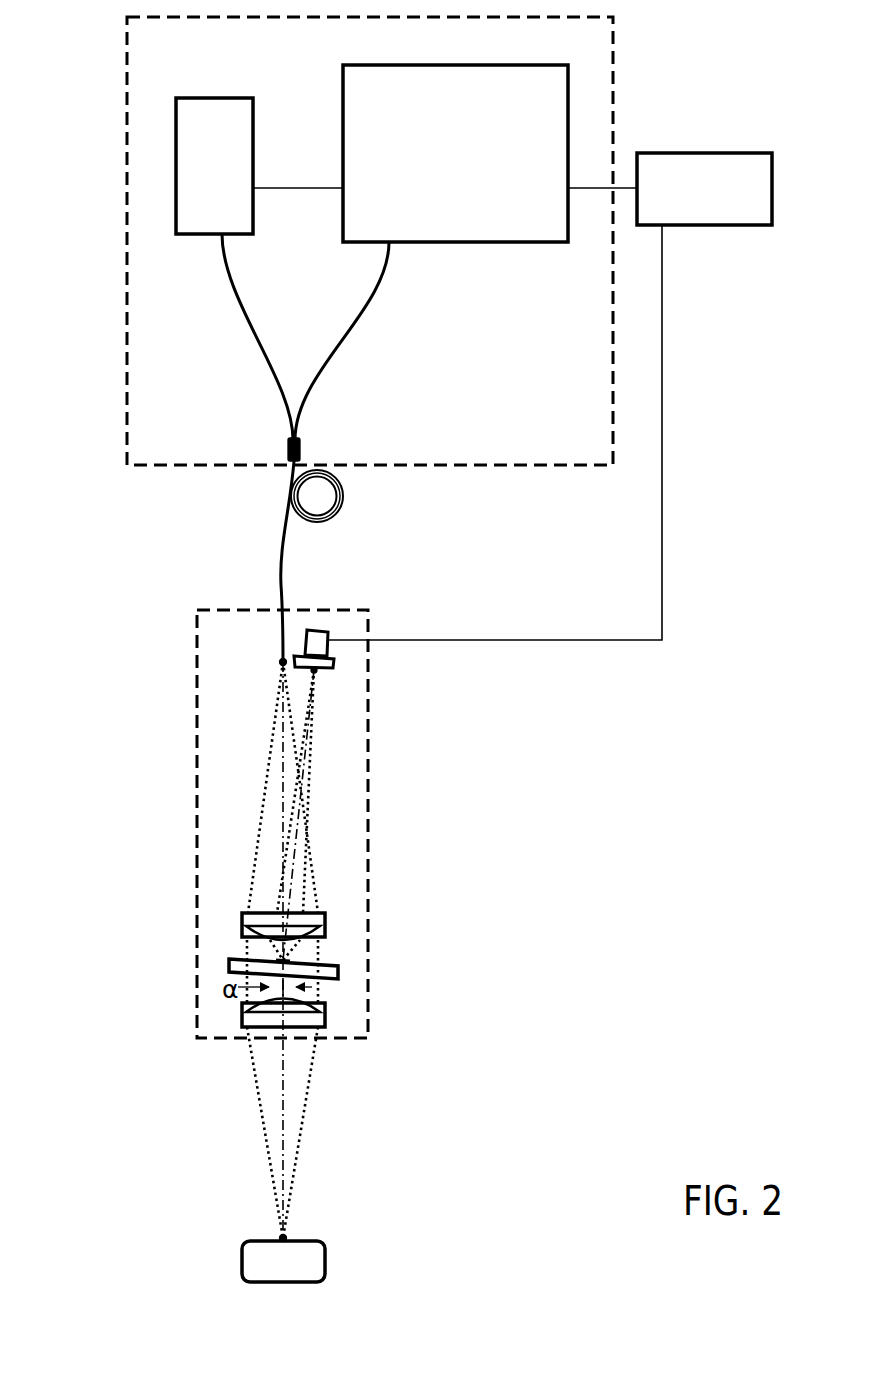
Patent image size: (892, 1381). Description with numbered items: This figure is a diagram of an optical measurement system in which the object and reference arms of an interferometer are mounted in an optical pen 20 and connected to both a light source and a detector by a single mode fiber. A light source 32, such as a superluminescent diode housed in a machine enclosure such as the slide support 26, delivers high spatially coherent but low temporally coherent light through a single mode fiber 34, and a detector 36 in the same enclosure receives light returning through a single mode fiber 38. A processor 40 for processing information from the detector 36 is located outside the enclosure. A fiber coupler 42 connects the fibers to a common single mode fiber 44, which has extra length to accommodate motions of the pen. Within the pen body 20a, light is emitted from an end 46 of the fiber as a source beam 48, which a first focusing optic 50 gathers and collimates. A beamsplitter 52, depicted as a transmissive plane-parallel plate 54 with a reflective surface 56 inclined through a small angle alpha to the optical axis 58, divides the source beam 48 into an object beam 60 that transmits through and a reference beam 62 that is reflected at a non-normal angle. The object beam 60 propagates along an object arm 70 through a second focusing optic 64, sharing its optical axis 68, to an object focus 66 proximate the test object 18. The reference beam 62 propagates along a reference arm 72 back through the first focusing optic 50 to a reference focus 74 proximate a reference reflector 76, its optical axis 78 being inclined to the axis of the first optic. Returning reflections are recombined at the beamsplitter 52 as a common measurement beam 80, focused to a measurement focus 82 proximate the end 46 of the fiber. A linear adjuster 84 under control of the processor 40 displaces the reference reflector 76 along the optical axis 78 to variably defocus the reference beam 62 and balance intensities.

The test object 18 is at (326, 1260).
The optical pen 20 is at (200, 824).
The pen body 20a is at (197, 725).
The slide support 26 is at (125, 221).
The light source 32 is at (230, 170).
The single mode fiber 34 is at (230, 297).
The detector 36 is at (457, 157).
The single mode fiber 38 is at (370, 312).
The processor 40 is at (715, 200).
The fiber coupler 42 is at (287, 450).
The single mode fiber 44 is at (280, 548).
The end of the single mode fiber 46 is at (280, 660).
The source beam 48 is at (206, 872).
The first focusing optic 50 is at (242, 928).
The beamsplitter 52 is at (338, 970).
The transmissive plane-parallel plate 54 is at (229, 965).
The reflective surface 56 is at (275, 957).
The optical axis 58 is at (268, 813).
The object beam 60 is at (329, 997).
The reference beam 62 is at (304, 951).
The second focusing optic 64 is at (242, 1020).
The object focus 66 is at (281, 1236).
The optical axis 68 is at (283, 1090).
The object arm 70 is at (229, 1139).
The reference arm 72 is at (324, 774).
The reference focus 74 is at (316, 672).
The reference reflector 76 is at (333, 668).
The optical axis 78 is at (300, 864).
The measurement beam 80 is at (258, 780).
The measurement focus 82 is at (279, 675).
The linear adjuster 84 is at (318, 630).